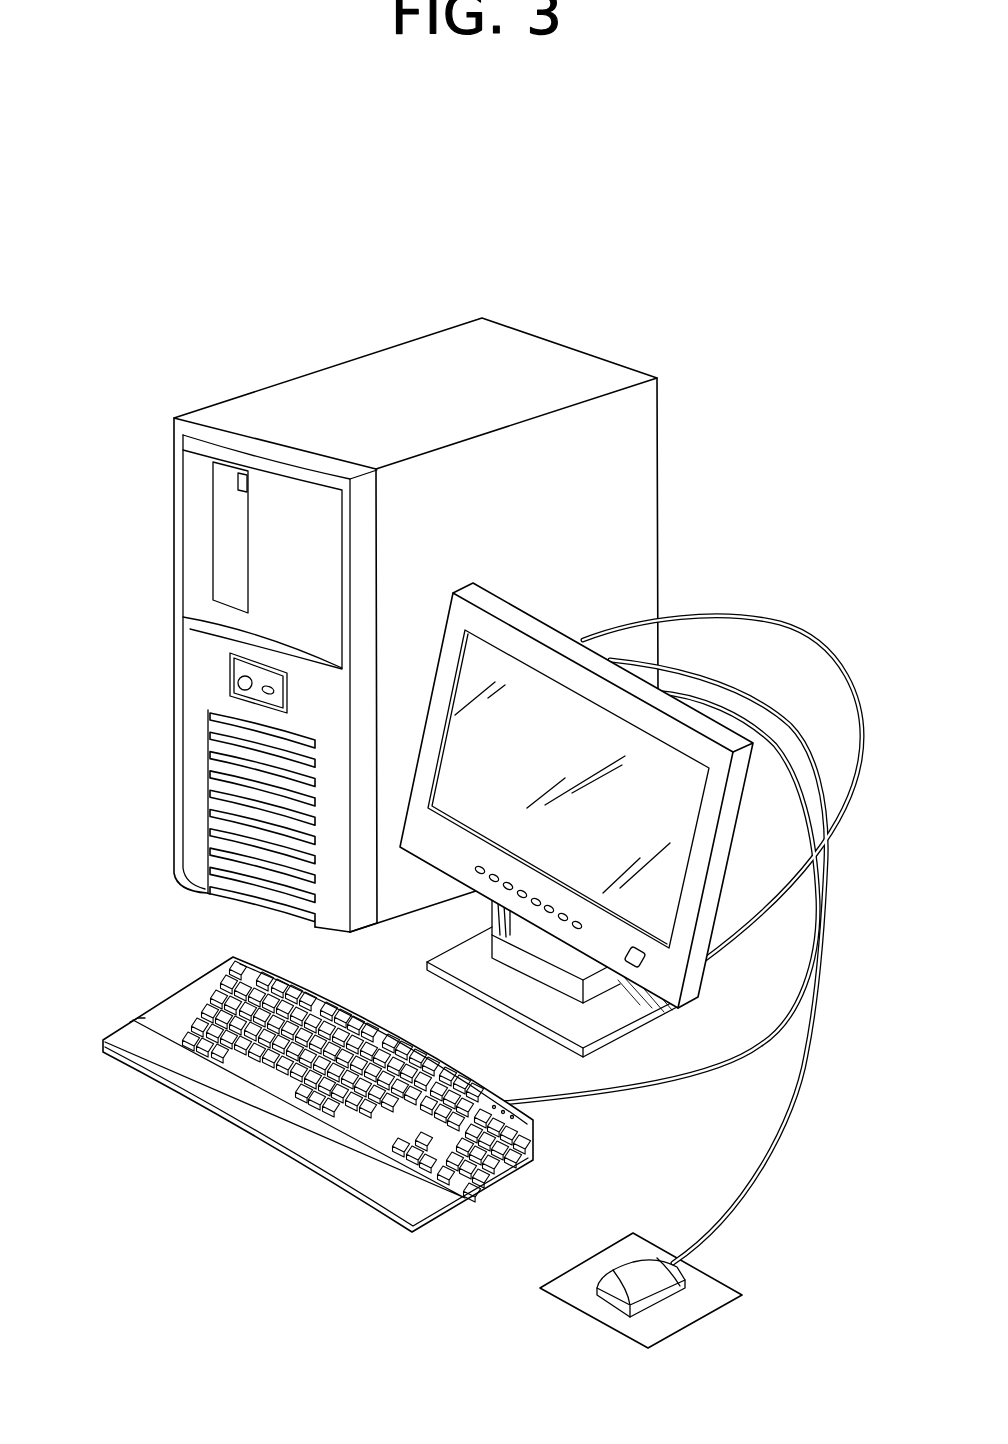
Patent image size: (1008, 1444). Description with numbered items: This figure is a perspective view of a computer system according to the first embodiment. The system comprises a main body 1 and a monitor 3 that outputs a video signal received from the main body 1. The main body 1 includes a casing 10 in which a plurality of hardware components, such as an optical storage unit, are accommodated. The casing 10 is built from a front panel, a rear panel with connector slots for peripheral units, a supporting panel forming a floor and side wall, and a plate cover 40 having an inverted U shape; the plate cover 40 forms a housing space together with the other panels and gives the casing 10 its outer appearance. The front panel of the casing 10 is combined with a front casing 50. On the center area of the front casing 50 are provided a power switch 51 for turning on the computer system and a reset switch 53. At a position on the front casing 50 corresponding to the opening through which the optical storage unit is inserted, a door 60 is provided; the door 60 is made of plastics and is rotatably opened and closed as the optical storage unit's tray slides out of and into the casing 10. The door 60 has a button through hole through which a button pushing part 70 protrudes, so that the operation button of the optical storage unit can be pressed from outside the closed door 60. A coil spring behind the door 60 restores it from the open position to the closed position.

The main body 1 is at (750, 460).
The monitor 3 is at (725, 872).
The casing 10 is at (223, 316).
The plate cover 40 is at (288, 388).
The front casing 50 is at (198, 414).
The power switch 51 is at (240, 681).
The reset switch 53 is at (262, 692).
The door 60 is at (232, 548).
The button pushing part 70 is at (240, 477).